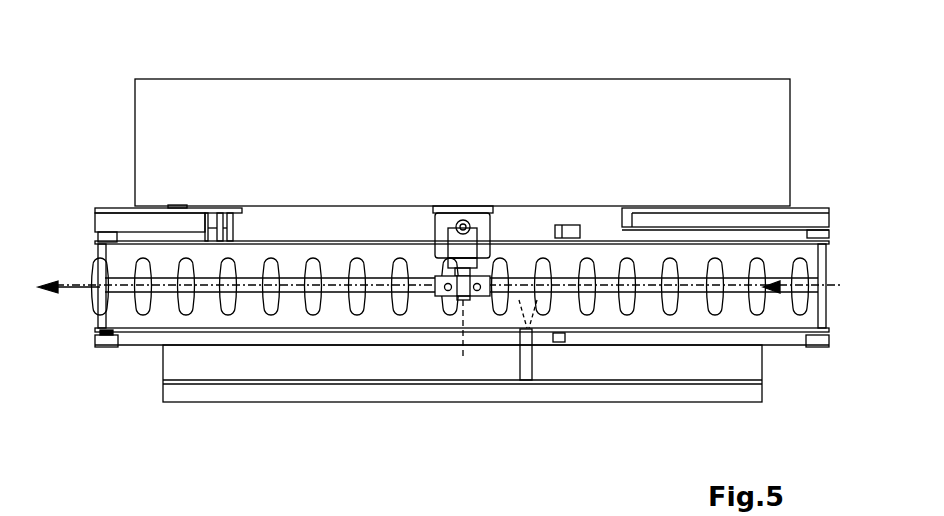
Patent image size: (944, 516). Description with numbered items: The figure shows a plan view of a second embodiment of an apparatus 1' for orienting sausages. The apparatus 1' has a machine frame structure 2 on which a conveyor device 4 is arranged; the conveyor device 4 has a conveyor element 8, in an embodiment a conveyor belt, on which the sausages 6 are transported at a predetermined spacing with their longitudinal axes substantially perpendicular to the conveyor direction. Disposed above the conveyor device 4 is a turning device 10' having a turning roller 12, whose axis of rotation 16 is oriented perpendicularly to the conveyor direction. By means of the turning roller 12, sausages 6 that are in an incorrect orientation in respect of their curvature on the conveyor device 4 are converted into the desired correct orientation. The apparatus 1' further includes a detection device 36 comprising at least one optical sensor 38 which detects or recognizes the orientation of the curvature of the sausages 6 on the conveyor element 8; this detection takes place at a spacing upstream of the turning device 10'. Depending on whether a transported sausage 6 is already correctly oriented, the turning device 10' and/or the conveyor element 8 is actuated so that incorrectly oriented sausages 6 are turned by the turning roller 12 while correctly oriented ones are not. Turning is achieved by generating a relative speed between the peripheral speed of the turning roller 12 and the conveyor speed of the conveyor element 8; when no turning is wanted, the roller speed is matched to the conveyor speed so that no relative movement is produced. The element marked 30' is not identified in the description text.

The apparatus 1' is at (449, 393).
The machine frame structure 2 is at (703, 108).
The conveyor device 4 is at (125, 378).
The sausages 6 is at (232, 300).
The conveyor element 8 is at (817, 320).
The turning device 10' is at (478, 156).
The turning roller 12 is at (486, 278).
The axis of rotation 16 is at (450, 338).
The pneumatic cylinder 30' is at (485, 144).
The detection device 36 is at (498, 360).
The optical sensor 38 is at (528, 370).